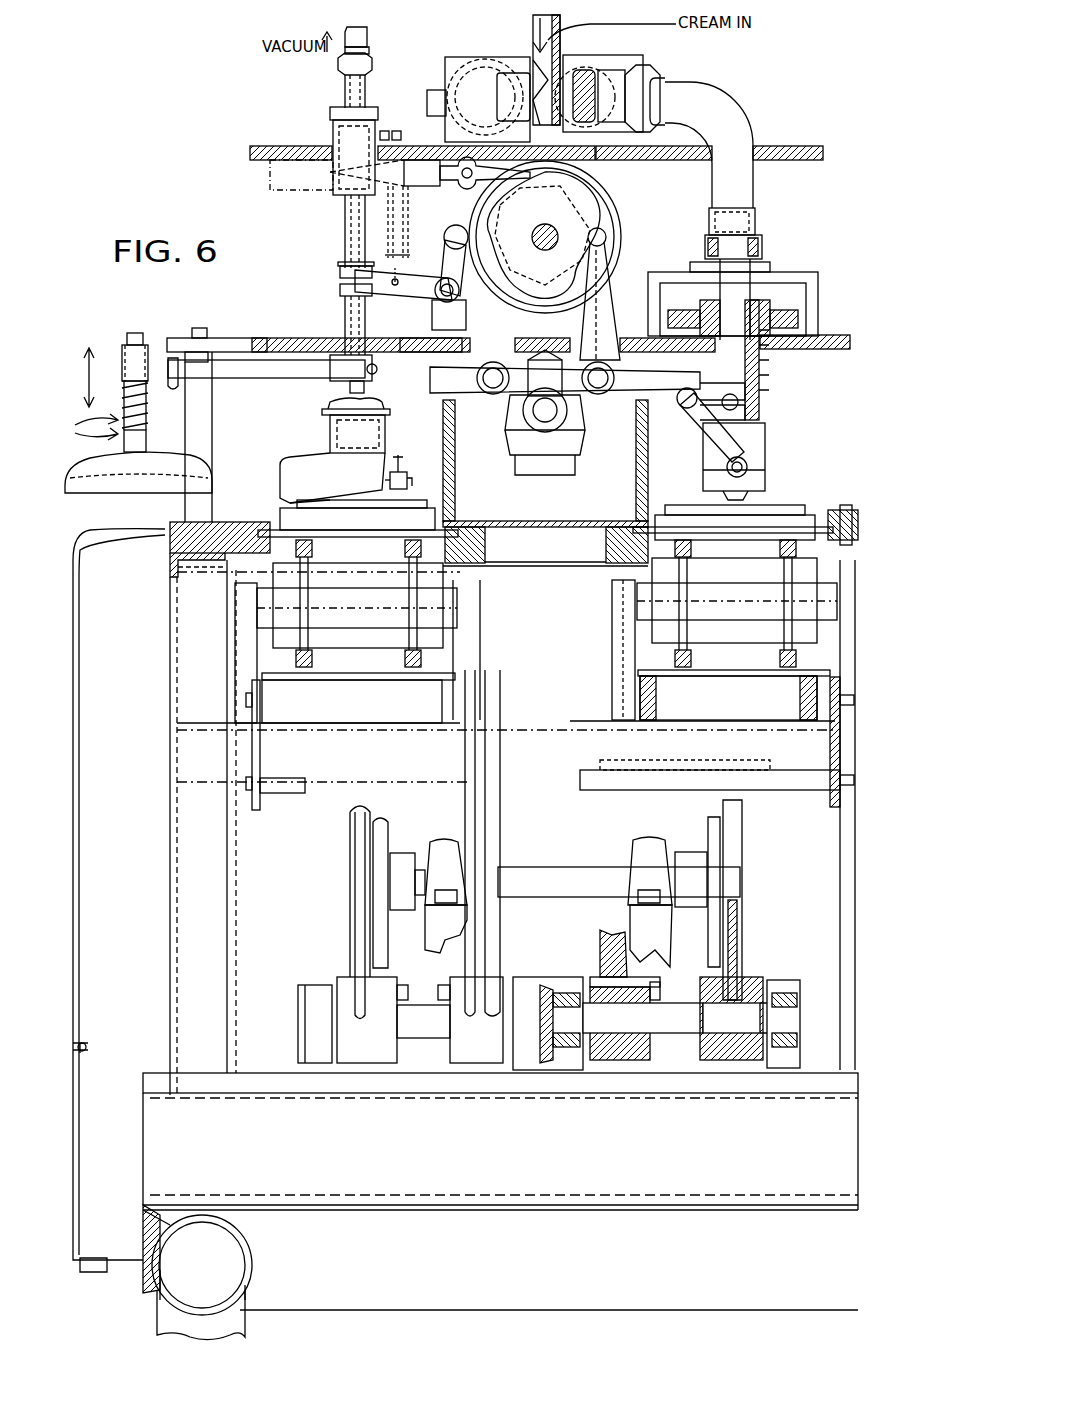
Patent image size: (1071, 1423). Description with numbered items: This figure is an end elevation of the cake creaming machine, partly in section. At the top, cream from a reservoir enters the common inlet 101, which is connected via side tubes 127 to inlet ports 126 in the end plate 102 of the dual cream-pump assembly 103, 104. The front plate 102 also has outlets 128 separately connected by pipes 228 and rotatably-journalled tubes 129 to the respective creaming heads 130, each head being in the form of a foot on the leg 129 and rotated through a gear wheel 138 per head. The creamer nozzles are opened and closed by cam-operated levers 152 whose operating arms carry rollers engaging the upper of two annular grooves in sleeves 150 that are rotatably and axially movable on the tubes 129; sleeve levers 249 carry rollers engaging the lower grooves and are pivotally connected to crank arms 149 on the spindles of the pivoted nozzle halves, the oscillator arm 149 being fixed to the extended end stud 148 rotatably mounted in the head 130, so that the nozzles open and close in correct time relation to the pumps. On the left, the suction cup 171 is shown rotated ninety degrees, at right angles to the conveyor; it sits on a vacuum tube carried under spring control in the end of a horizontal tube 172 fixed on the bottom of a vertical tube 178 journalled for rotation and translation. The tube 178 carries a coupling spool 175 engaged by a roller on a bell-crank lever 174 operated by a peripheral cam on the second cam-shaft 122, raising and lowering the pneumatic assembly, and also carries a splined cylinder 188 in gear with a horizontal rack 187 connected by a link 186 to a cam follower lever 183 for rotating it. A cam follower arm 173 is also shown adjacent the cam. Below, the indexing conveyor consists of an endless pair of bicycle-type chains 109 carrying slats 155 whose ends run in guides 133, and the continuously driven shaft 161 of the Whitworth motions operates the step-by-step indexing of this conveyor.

The vertical tube 178 is at (356, 30).
The splined cylinder 188 is at (343, 176).
The coupling spool 175 is at (340, 286).
The bell-crank lever 174 is at (420, 288).
The horizontal rack 187 is at (385, 209).
The link 186 is at (478, 178).
The dual cream-pump assembly 103 is at (475, 38).
The side tubes 127 is at (515, 78).
The common inlet 101 is at (560, 40).
The end plate 102 is at (580, 56).
The inlet ports 126 is at (585, 72).
The dual cream-pump assembly 104 is at (612, 70).
The outlets 128 is at (642, 65).
The pipes 228 is at (709, 100).
The rotatably-journalled tubes 129 is at (750, 297).
The gear wheel 138 is at (690, 308).
The second cam-shaft 122 is at (560, 225).
The cam follower lever 183 is at (520, 228).
The cam follower arm 173 is at (455, 226).
The cam-operated levers 152 is at (565, 373).
The sleeves 150 is at (770, 387).
The sleeve levers 249 is at (680, 410).
The creaming heads 130 is at (778, 440).
The crank arms 149 is at (705, 450).
The end stud 148 is at (422, 488).
The slats 155 is at (330, 525).
The guides 133 is at (248, 554).
The suction cup 171 is at (168, 468).
The horizontal tube 172 is at (270, 370).
The conveyor chains 109 is at (775, 548).
The shaft 161 is at (578, 858).